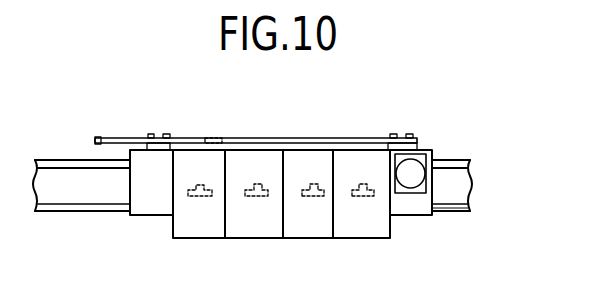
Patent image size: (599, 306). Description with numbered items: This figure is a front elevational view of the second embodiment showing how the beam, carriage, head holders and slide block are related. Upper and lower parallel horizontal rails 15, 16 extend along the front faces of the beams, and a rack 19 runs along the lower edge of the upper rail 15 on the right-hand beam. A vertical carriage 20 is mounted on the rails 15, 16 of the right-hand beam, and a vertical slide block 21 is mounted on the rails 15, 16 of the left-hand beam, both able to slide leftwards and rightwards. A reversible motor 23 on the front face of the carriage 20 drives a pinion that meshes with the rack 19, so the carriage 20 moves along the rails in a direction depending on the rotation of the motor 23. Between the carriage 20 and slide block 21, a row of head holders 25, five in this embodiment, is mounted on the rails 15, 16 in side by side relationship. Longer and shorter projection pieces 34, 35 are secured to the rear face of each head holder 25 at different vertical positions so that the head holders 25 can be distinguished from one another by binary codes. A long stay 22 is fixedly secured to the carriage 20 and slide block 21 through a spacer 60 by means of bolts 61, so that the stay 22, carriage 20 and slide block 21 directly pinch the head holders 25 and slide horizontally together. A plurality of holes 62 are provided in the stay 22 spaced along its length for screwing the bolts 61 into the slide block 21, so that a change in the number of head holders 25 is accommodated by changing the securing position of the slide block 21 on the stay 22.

The upper rail 15 is at (468, 162).
The lower rail 16 is at (458, 212).
The rack 19 is at (462, 172).
The carriage 20 is at (413, 207).
The slide block 21 is at (140, 200).
The stay 22 is at (318, 138).
The reversible motor 23 is at (414, 172).
The head holder 25 is at (250, 227).
The longer projection piece 34 is at (263, 197).
The shorter projection piece 35 is at (256, 184).
The spacer 60 is at (150, 147).
The bolt 61 is at (151, 134).
The hole 62 is at (108, 137).